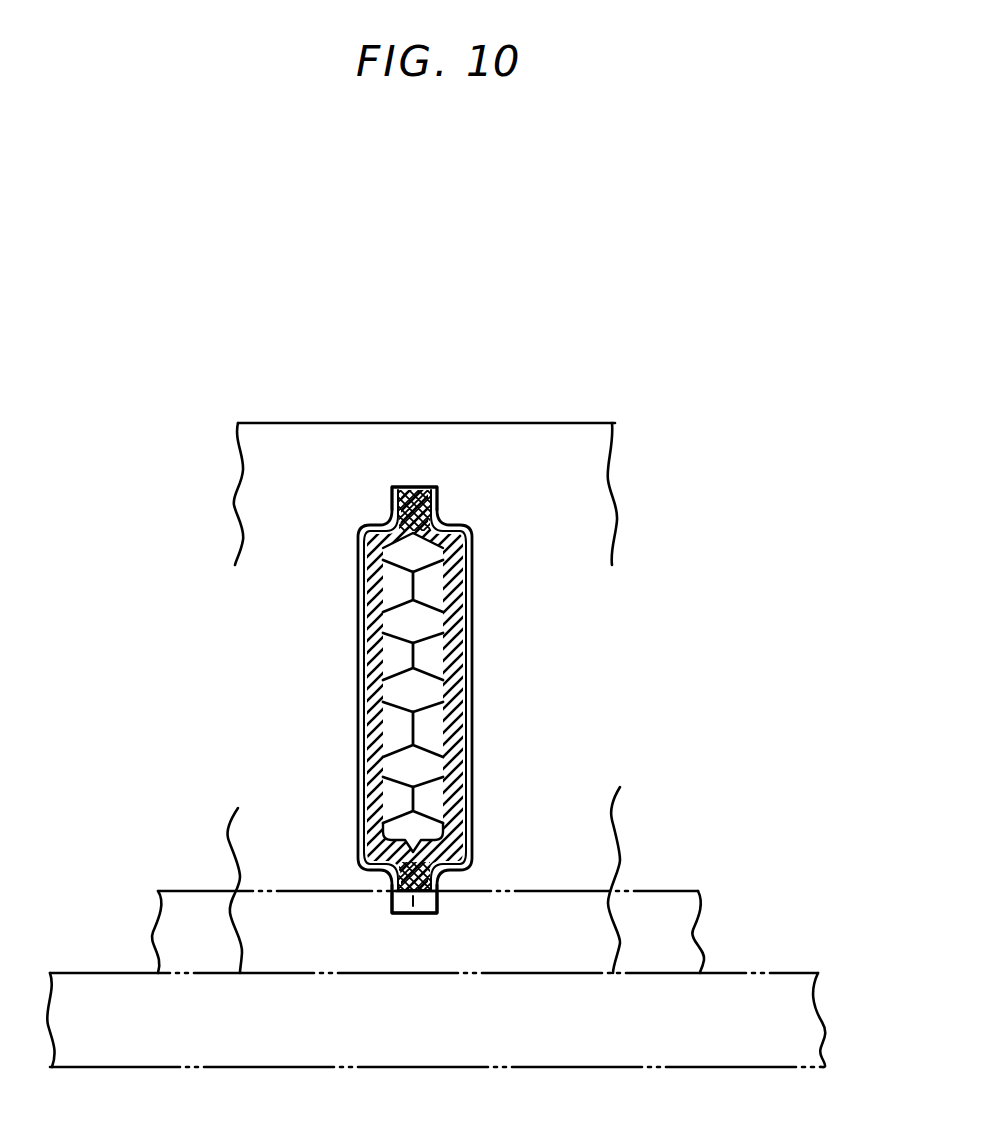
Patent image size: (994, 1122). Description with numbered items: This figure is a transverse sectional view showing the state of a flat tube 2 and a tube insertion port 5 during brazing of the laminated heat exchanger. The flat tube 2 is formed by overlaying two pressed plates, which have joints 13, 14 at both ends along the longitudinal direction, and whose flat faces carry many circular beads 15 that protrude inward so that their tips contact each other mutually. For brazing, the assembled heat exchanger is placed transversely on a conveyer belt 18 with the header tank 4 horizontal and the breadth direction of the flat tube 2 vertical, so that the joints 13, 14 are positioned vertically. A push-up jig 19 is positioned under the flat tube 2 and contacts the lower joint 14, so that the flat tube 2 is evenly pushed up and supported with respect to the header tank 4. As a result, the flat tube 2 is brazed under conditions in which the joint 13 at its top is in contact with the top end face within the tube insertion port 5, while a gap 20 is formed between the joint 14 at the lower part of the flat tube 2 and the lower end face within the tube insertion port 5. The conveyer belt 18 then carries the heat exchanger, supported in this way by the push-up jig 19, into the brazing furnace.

The flat tube 2 is at (458, 720).
The header tank 4 is at (292, 438).
The tube insertion port 5 is at (372, 770).
The joint 13 is at (394, 497).
The joint 14 is at (380, 870).
The circular bead 15 is at (394, 590).
The conveyer belt 18 is at (733, 973).
The push-up jig 19 is at (652, 891).
The gap 20 is at (413, 903).